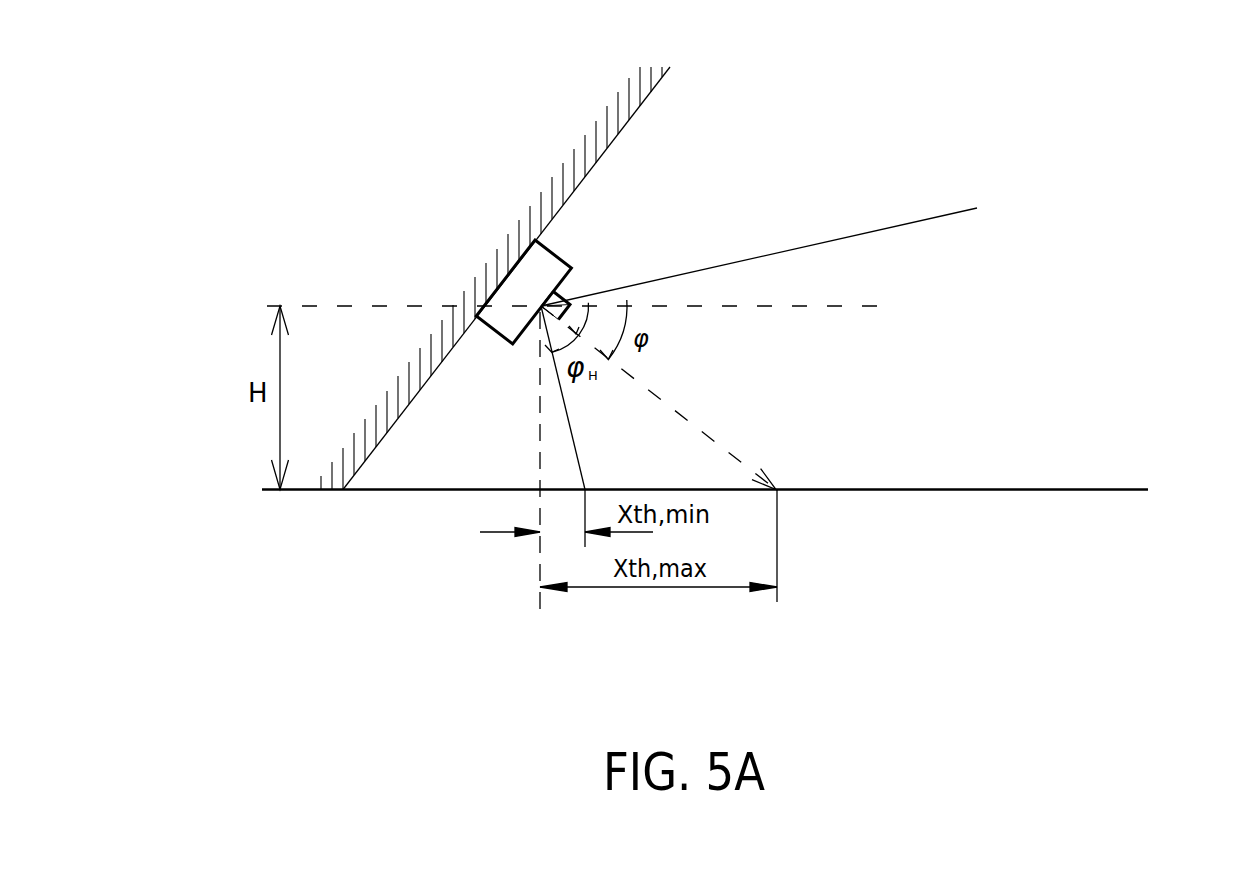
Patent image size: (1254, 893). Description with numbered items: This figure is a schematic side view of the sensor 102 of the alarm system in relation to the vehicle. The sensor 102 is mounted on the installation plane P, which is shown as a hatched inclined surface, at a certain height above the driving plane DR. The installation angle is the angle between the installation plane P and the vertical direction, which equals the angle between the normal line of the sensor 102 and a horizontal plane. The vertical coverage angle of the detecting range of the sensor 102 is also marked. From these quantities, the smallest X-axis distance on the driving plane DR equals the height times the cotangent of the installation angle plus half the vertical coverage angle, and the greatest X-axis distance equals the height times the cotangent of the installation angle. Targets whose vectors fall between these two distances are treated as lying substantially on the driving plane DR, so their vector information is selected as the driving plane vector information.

The sensor 102 is at (557, 257).
The installation plane P is at (607, 148).
The driving plane DR is at (1115, 490).